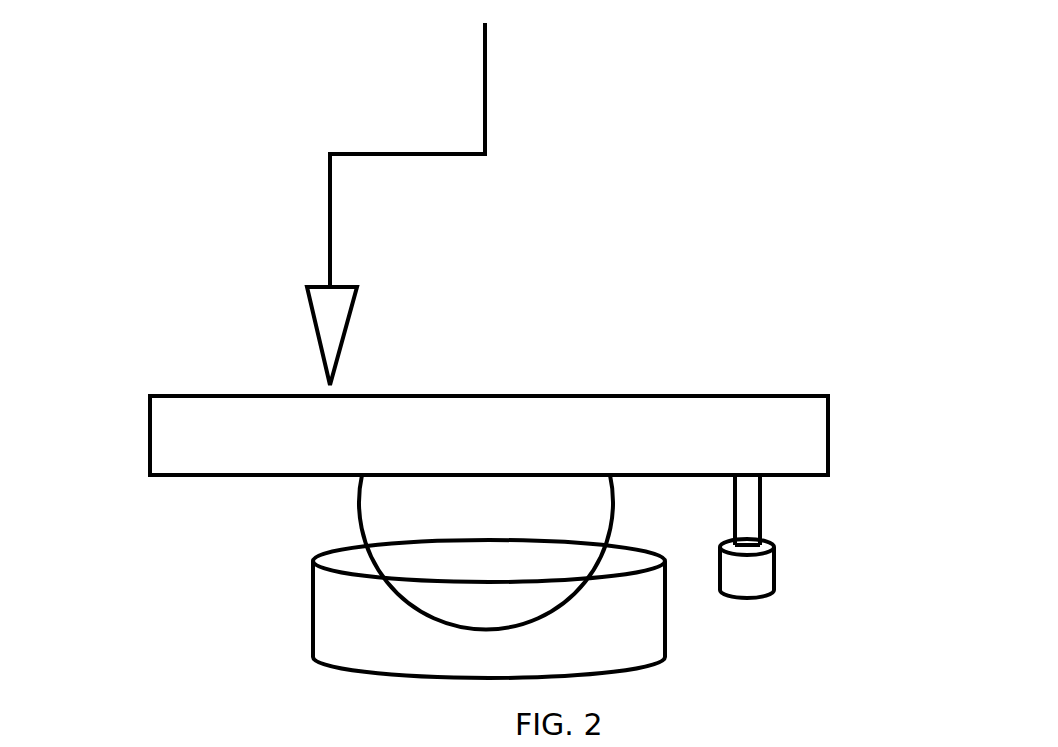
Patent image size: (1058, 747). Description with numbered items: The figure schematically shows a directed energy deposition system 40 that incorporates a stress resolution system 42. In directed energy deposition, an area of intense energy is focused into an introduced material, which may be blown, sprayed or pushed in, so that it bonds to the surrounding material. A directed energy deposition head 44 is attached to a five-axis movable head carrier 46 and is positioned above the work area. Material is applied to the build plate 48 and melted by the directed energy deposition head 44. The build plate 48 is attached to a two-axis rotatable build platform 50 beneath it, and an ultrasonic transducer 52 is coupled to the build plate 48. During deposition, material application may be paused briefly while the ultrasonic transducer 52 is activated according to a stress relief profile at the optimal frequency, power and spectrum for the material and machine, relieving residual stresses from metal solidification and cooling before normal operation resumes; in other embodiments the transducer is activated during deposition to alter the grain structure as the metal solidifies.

The directed energy deposition system 40 is at (666, 224).
The stress resolution system 42 is at (840, 430).
The directed energy deposition head 44 is at (312, 313).
The 5-axis movable head carrier 46 is at (332, 205).
The build plate 48 is at (185, 413).
The 2-axis rotatable build platform 50 is at (420, 495).
The ultrasonic transducer 52 is at (775, 573).